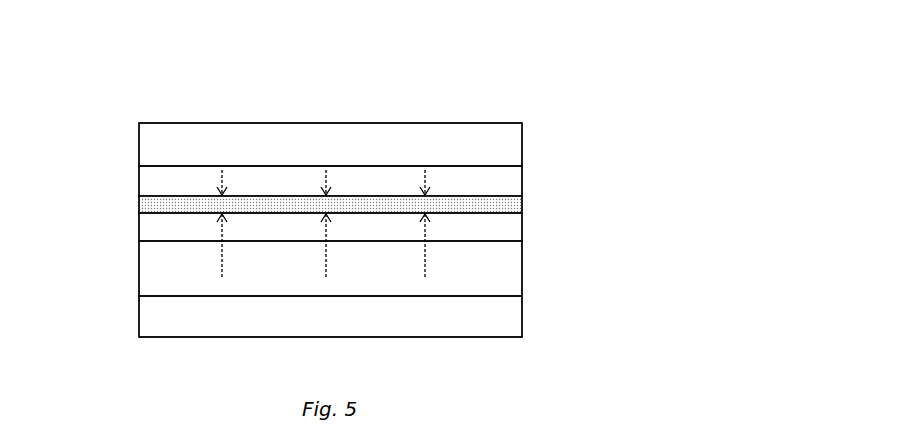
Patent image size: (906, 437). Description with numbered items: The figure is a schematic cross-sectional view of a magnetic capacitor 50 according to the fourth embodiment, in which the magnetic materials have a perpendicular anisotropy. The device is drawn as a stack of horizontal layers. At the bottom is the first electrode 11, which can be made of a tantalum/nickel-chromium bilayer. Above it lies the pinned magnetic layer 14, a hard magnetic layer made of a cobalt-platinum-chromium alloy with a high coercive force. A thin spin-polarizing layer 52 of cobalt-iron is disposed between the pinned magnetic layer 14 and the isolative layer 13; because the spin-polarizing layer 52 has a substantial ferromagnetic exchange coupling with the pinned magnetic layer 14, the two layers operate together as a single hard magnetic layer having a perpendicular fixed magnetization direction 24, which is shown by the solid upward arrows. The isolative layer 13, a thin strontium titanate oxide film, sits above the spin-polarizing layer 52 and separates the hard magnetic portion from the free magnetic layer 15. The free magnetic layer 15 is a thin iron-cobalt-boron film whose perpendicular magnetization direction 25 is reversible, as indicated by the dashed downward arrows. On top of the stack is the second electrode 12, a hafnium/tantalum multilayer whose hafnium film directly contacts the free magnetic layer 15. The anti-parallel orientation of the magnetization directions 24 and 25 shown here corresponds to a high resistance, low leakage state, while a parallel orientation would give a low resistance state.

The magnetic capacitor 50 is at (540, 97).
The second conductive electrode 12 is at (522, 135).
The free magnetic layer 15 is at (522, 172).
The isolative layer 13 is at (522, 203).
The spin-polarizing layer 52 is at (522, 233).
The pinned magnetic layer 14 is at (522, 272).
The first conductive electrode 11 is at (522, 323).
The reversible magnetization direction 25 is at (222, 181).
The fixed magnetization direction 24 is at (222, 255).